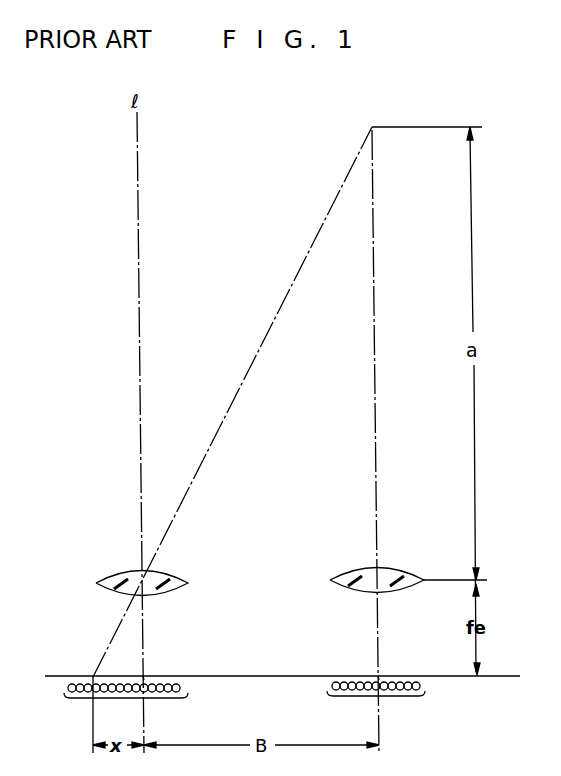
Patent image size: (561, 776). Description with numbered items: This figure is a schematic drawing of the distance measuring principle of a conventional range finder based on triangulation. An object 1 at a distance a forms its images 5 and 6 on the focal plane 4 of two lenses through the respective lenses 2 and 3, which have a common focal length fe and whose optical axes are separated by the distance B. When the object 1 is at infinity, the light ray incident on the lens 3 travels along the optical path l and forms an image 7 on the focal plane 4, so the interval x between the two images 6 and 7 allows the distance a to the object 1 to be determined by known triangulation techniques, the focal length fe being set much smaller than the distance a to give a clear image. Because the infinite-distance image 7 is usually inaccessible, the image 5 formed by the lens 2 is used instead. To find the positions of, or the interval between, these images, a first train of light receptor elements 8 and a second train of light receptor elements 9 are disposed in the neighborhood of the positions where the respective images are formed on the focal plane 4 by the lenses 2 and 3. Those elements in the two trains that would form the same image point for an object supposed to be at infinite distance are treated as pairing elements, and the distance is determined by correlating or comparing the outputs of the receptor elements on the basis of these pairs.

The object 1 is at (372, 127).
The lens 2 is at (402, 578).
The lens 3 is at (176, 581).
The focal plane 4 is at (509, 675).
The image 5 is at (380, 676).
The image 6 is at (93, 676).
The image 7 is at (145, 676).
The first train of light receptor elements 8 is at (372, 698).
The second train of light receptor elements 9 is at (133, 700).